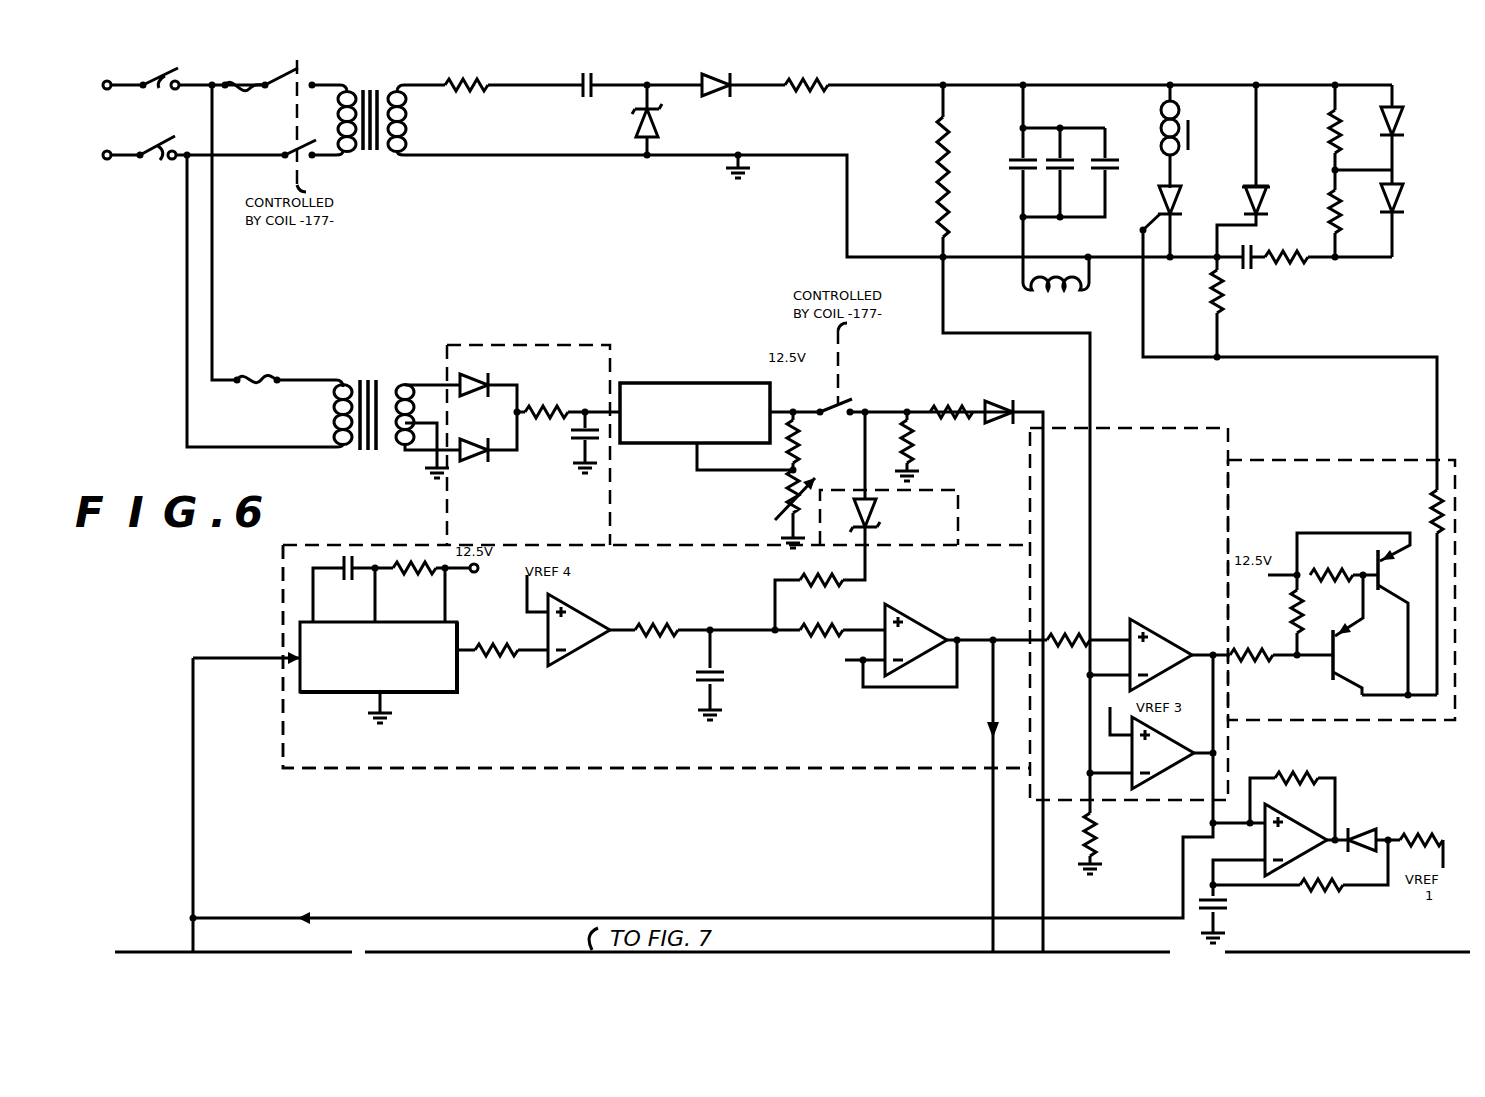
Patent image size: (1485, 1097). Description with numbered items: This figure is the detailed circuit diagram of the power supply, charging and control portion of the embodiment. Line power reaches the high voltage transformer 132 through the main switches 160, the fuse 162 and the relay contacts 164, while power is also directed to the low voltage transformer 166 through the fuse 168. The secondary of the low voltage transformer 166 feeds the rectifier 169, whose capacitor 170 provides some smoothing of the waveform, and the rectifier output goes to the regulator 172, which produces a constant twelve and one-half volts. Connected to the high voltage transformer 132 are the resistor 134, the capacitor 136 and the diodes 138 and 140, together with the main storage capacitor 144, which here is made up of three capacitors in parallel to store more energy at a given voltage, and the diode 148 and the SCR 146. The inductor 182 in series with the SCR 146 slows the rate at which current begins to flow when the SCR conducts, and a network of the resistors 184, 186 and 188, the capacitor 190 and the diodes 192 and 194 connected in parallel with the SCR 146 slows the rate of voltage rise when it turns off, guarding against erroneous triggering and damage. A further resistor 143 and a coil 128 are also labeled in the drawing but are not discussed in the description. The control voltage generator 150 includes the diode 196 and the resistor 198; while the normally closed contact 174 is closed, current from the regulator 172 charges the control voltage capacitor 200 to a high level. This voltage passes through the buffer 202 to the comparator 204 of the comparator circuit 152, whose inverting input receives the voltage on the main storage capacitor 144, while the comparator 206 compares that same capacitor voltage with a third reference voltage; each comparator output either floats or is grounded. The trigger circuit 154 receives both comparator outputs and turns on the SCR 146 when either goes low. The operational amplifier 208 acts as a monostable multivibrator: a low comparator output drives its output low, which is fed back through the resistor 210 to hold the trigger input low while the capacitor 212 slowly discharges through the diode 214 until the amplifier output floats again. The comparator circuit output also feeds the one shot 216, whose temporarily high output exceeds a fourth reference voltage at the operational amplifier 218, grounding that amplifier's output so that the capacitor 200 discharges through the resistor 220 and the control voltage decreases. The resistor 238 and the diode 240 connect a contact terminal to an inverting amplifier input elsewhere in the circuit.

The main switches 160 is at (135, 114).
The fuse 162 is at (262, 62).
The relay contacts 164 is at (290, 134).
The high voltage transformer 132 is at (388, 86).
The resistor 134 is at (485, 84).
The capacitor 136 is at (592, 75).
The diode 138 is at (633, 125).
The diode 140 is at (728, 60).
The resistor 143 is at (815, 80).
The main storage capacitor 144 is at (1120, 128).
The coil 128 is at (1040, 290).
The inductor 182 is at (1180, 130).
The SCR 146 is at (1180, 200).
The diode 148 is at (1264, 198).
The resistor 184 is at (1324, 130).
The resistor 186 is at (1328, 222).
The resistor 188 is at (1302, 268).
The capacitor 190 is at (1247, 270).
The diode 192 is at (1405, 120).
The diode 194 is at (1405, 192).
The fuse 168 is at (270, 364).
The low voltage transformer 166 is at (392, 356).
The rectifier 169 is at (578, 344).
The capacitor 170 is at (570, 454).
The regulator 172 is at (712, 382).
The contact 174 is at (848, 404).
The diode 240 is at (1008, 378).
The resistor 238 is at (946, 432).
The diode 196 is at (870, 513).
The comparator circuit 152 is at (1138, 428).
The trigger circuit 154 is at (1386, 460).
The control voltage generator 150 is at (386, 544).
The one shot 216 is at (437, 686).
The operational amplifier 218 is at (585, 644).
The resistor 220 is at (690, 614).
The control voltage capacitor 200 is at (724, 674).
The resistor 198 is at (808, 584).
The buffer 202 is at (912, 628).
The comparator 204 is at (1185, 622).
The comparator 206 is at (1189, 758).
The resistor 210 is at (1282, 776).
The diode 214 is at (1352, 826).
The operational amplifier 208 is at (1320, 855).
The capacitor 212 is at (1224, 904).